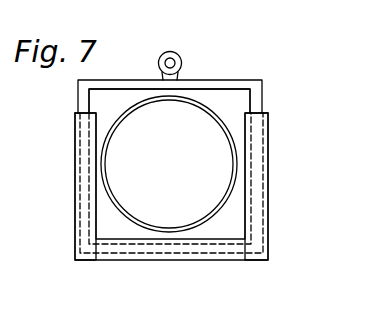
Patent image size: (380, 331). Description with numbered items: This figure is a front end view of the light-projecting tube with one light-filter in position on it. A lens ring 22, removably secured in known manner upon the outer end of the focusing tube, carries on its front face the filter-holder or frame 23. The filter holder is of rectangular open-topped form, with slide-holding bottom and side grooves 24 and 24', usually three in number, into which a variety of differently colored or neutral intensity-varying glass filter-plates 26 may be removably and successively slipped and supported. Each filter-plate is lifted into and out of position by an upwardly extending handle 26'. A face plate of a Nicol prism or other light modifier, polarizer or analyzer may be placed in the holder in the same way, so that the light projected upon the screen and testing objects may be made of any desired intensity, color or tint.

The lens ring 22 is at (218, 200).
The filter-holder or frame 23 is at (268, 197).
The slide holding bottom groove 24 is at (273, 186).
The slide holding side groove 24' is at (158, 186).
The glass filter-plate 26 is at (169, 101).
The handle 26' is at (193, 60).